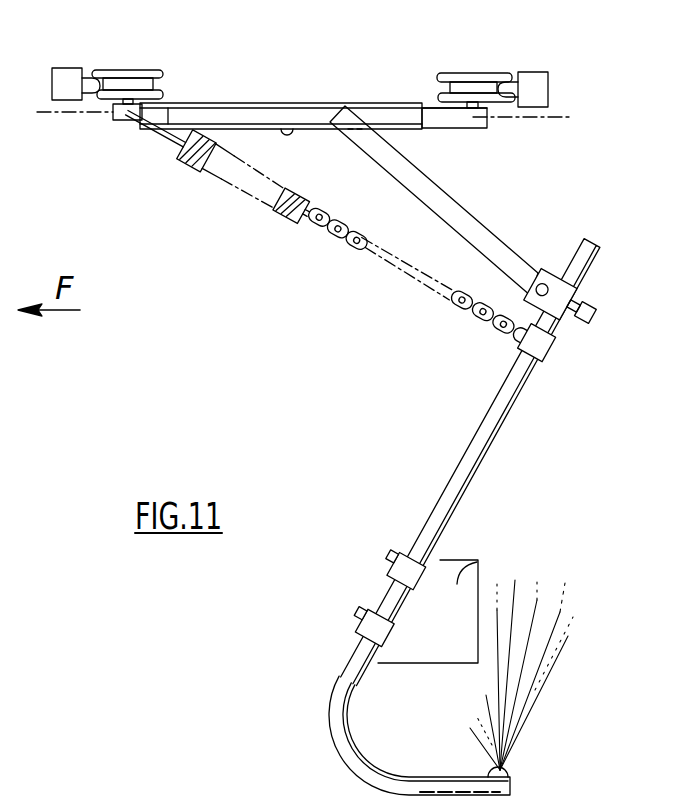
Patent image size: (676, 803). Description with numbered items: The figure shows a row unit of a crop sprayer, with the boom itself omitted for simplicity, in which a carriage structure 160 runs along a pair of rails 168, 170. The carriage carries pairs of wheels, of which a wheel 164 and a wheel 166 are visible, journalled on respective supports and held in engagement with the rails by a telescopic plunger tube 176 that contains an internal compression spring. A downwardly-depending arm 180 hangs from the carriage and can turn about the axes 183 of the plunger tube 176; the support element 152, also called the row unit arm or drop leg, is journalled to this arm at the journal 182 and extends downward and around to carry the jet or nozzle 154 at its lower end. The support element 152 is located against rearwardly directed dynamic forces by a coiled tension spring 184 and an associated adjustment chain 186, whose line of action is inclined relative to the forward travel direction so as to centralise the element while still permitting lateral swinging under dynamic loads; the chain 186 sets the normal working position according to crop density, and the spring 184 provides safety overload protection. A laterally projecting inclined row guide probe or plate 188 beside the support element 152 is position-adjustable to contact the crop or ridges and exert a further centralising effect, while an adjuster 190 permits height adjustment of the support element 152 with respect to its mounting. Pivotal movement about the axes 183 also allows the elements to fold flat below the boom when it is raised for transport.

The support element 152 is at (341, 678).
The jet or nozzle 154 is at (487, 767).
The carriage structure 160 is at (470, 153).
The wheel 164 is at (160, 72).
The wheel 166 is at (450, 74).
The rail 168 is at (75, 68).
The rail 170 is at (500, 82).
The telescopic plunger tube 176 is at (292, 128).
The downwardly-depending arm 180 is at (437, 208).
The journal 182 is at (545, 283).
The axis 183 is at (40, 113).
The coiled tension spring 184 is at (238, 187).
The adjustment chain 186 is at (467, 312).
The row guide probe or plate 188 is at (478, 560).
The adjuster 190 is at (584, 322).